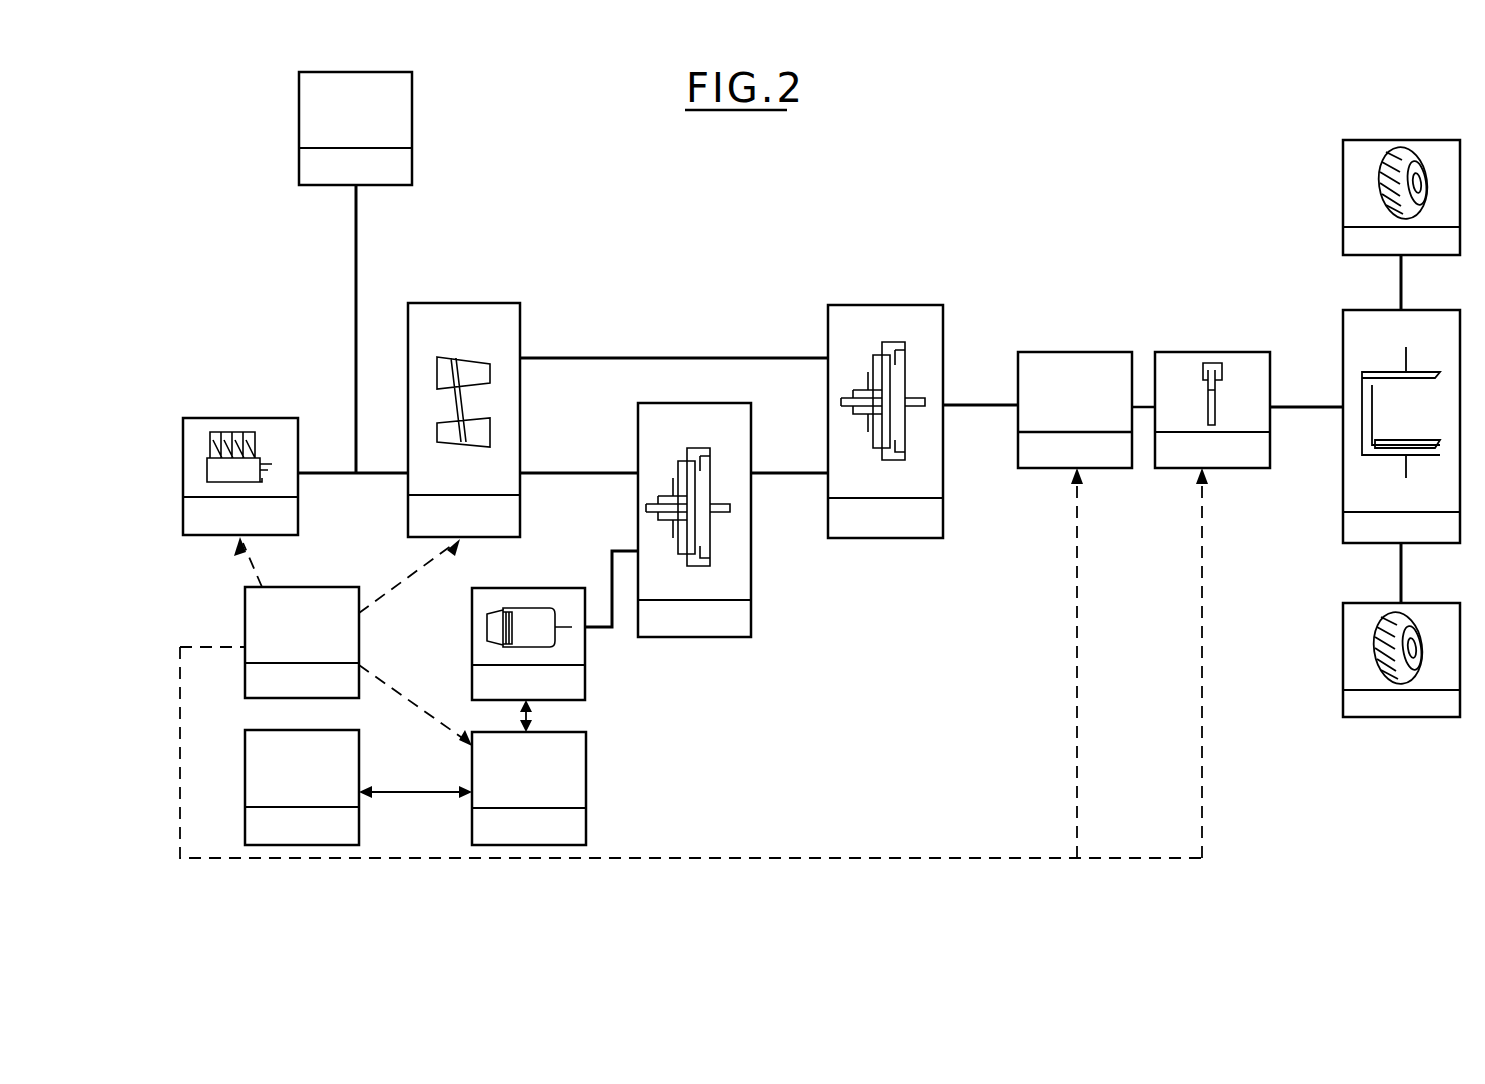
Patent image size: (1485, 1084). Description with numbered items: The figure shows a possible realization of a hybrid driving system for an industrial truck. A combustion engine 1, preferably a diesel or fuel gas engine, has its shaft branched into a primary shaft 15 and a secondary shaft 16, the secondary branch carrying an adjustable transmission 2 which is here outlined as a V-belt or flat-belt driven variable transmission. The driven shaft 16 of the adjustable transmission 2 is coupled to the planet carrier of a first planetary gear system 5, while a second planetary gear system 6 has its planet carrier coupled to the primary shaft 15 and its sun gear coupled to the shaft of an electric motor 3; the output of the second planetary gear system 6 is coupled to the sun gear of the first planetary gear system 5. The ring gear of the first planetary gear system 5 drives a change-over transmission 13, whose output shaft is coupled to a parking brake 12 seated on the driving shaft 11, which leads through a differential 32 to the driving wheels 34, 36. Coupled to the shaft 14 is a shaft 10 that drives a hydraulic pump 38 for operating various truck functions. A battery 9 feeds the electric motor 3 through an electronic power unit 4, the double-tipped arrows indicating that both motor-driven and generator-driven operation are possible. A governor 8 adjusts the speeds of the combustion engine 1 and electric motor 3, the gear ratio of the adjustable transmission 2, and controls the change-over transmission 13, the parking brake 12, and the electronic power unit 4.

The combustion engine 1 is at (197, 425).
The adjustable transmission 2 is at (480, 303).
The electric motor 3 is at (580, 675).
The electronic power unit 4 is at (580, 780).
The first planetary gear system 5 is at (866, 318).
The second planetary gear system 6 is at (745, 432).
The governor 8 is at (270, 632).
The battery 9 is at (258, 780).
The shaft 10 is at (356, 243).
The driving shaft 11 is at (1295, 405).
The parking brake 12 is at (1170, 358).
The change-over transmission 13 is at (1060, 358).
The shaft 14 is at (373, 471).
The primary shaft 15 is at (553, 471).
The secondary shaft 16 is at (605, 356).
The differential 32 is at (1360, 505).
The driving wheel 34 is at (1350, 200).
The driving wheel 36 is at (1362, 705).
The hydraulic pump 38 is at (405, 113).